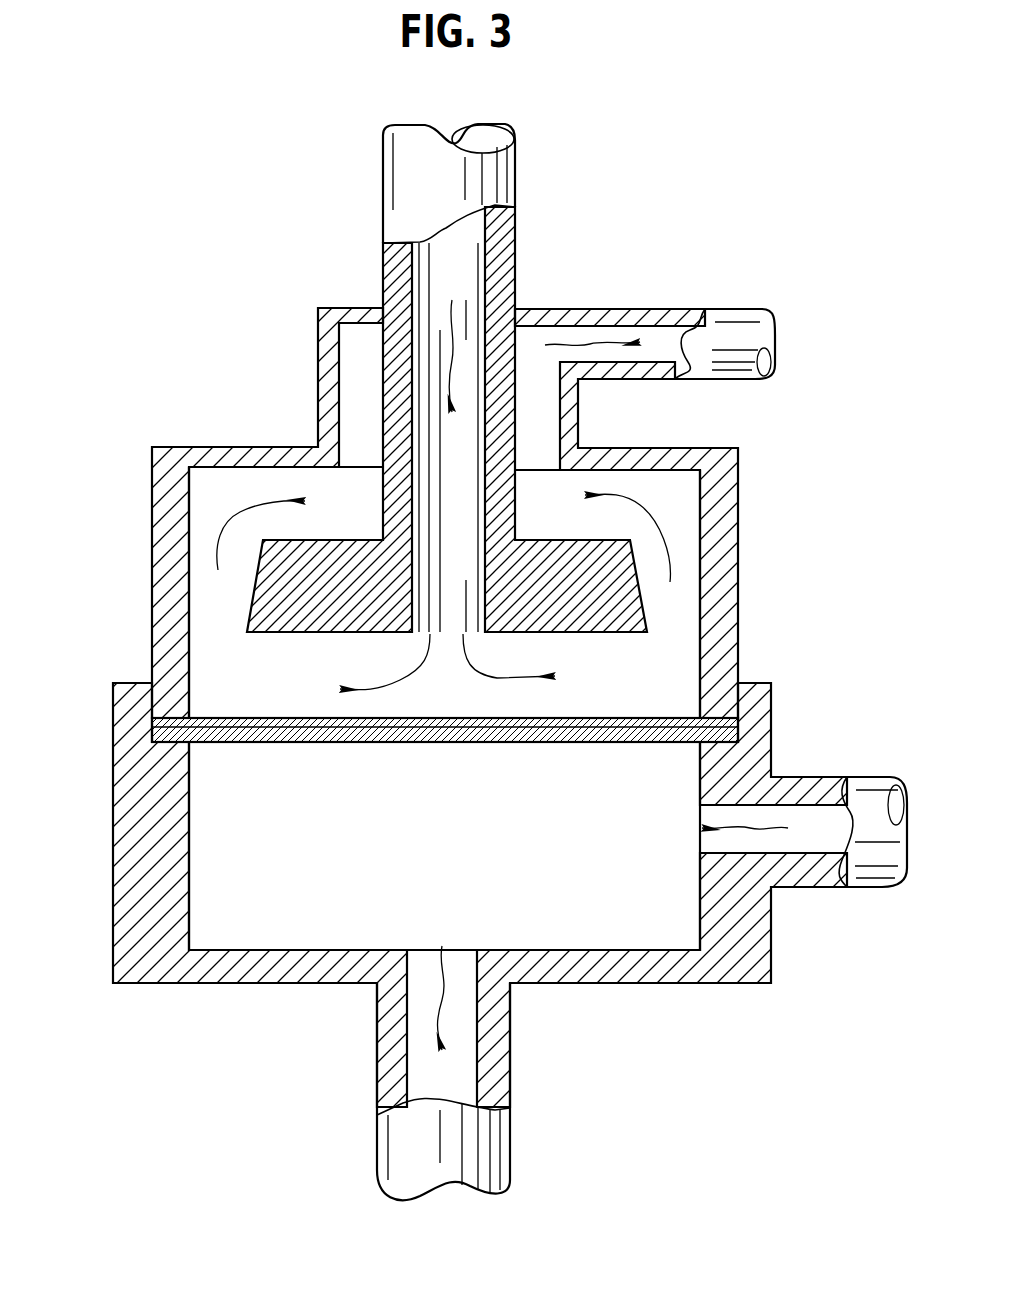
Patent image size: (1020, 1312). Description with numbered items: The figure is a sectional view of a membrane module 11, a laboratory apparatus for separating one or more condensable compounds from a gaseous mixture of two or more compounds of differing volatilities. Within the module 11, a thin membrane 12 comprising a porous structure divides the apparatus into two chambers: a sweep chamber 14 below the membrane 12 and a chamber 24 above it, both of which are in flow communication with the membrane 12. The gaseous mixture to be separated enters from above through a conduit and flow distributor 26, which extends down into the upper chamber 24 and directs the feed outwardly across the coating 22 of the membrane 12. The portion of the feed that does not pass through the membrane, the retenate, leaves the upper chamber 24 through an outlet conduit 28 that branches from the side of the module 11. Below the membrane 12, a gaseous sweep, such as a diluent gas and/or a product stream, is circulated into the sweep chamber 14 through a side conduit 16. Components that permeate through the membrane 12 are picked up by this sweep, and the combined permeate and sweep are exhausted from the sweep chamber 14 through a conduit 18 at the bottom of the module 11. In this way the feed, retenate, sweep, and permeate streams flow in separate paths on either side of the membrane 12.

The module 11 is at (276, 300).
The membrane 12 is at (241, 746).
The sweep chamber 14 is at (458, 859).
The conduit 16 is at (866, 888).
The conduit 18 is at (377, 1136).
The coating 22 is at (272, 718).
The chamber 24 is at (640, 689).
The conduit and flow distributor 26 is at (512, 177).
The outlet conduit 28 is at (737, 322).